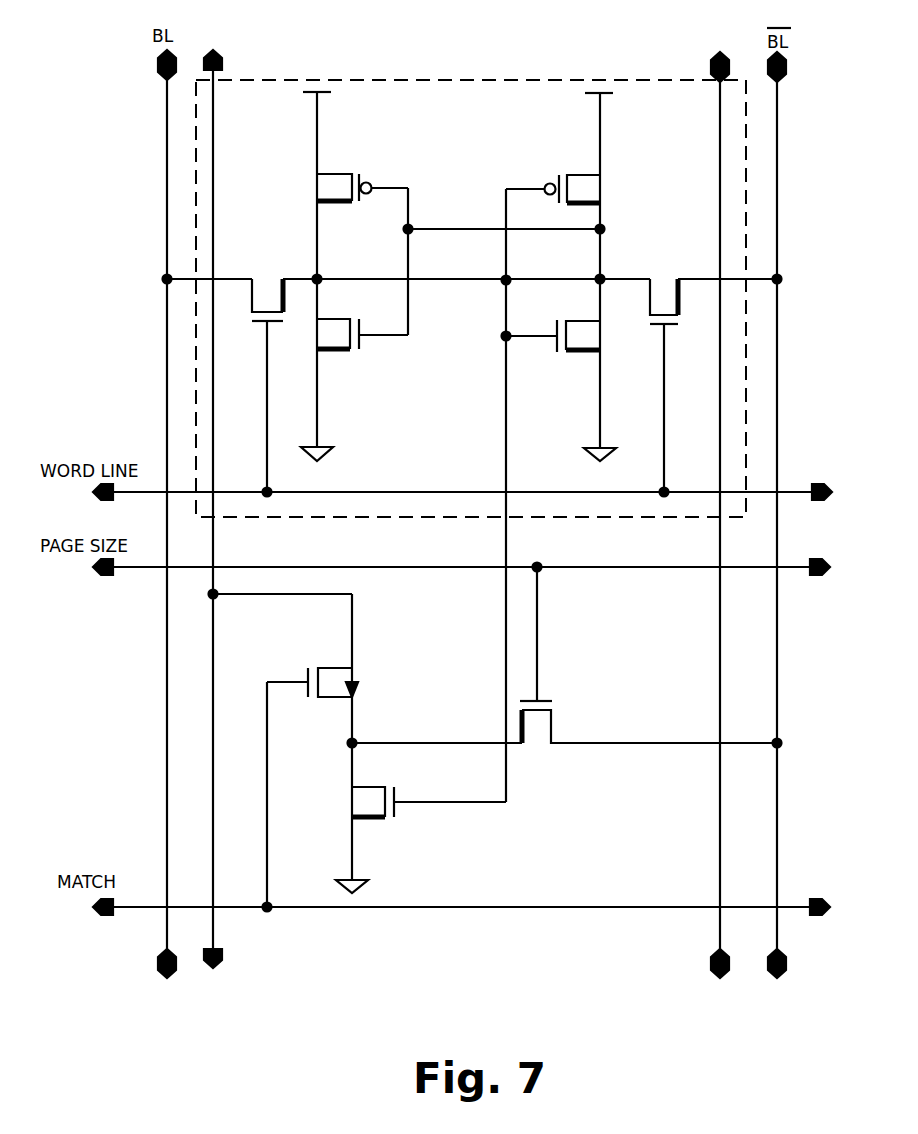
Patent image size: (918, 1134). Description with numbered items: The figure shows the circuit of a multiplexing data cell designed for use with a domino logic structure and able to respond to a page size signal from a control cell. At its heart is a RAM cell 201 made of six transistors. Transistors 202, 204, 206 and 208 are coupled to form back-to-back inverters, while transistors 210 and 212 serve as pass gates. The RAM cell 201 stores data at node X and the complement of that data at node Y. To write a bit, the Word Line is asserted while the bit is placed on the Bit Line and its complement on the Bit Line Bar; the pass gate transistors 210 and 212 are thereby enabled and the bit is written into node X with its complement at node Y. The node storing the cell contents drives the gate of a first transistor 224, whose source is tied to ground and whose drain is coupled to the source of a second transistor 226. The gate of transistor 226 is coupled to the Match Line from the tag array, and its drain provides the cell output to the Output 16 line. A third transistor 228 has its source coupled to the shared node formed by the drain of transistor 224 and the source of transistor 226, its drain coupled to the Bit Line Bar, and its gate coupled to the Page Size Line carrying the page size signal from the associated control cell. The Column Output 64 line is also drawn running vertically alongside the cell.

The RAM cell 201 is at (450, 88).
The transistor 202 is at (344, 226).
The transistor 204 is at (572, 227).
The transistor 206 is at (344, 363).
The transistor 208 is at (571, 363).
The pass gate transistor 210 is at (266, 372).
The pass gate transistor 212 is at (664, 372).
The first transistor 224 is at (410, 811).
The second transistor 226 is at (329, 753).
The third transistor 228 is at (651, 669).
The Output Line 16 is at (250, 496).
The column output line 64 is at (662, 498).